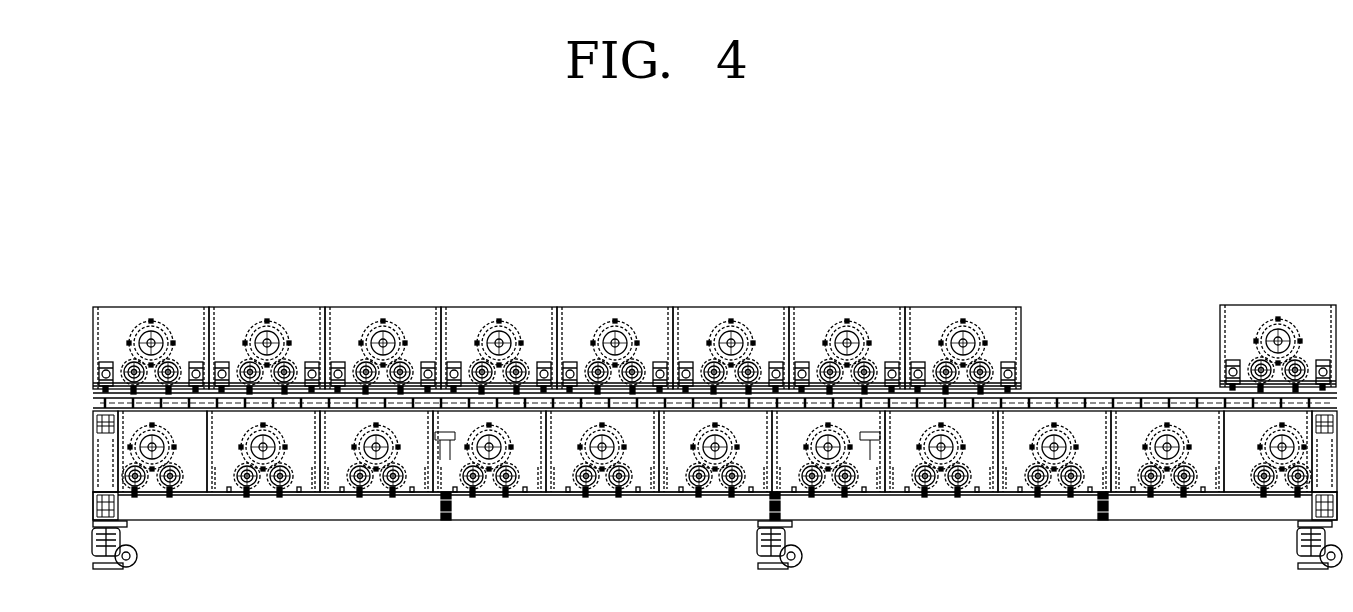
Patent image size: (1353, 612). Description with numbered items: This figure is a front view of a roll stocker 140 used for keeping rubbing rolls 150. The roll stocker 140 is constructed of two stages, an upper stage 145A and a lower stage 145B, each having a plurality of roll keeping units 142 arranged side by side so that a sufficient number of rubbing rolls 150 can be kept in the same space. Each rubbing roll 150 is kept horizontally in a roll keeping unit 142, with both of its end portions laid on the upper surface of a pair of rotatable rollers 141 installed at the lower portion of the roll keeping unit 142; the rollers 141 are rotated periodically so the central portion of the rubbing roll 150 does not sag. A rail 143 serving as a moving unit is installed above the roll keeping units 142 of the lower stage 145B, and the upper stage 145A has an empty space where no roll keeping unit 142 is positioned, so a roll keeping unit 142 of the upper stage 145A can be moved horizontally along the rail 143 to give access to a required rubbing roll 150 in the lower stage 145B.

The roll stocker 140 is at (59, 241).
The rotatable roller 141 is at (937, 364).
The roll keeping unit 142 is at (1280, 305).
The rail 143 is at (1125, 396).
The upper stage 145A is at (88, 310).
The lower stage 145B is at (88, 405).
The rubbing roll 150 is at (978, 338).